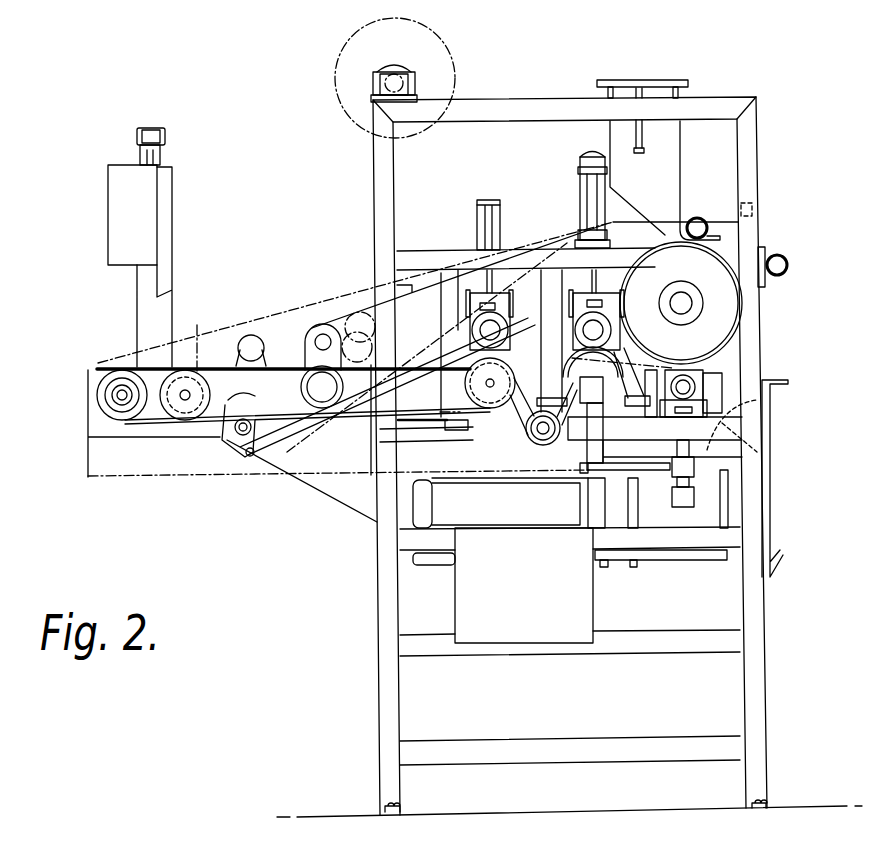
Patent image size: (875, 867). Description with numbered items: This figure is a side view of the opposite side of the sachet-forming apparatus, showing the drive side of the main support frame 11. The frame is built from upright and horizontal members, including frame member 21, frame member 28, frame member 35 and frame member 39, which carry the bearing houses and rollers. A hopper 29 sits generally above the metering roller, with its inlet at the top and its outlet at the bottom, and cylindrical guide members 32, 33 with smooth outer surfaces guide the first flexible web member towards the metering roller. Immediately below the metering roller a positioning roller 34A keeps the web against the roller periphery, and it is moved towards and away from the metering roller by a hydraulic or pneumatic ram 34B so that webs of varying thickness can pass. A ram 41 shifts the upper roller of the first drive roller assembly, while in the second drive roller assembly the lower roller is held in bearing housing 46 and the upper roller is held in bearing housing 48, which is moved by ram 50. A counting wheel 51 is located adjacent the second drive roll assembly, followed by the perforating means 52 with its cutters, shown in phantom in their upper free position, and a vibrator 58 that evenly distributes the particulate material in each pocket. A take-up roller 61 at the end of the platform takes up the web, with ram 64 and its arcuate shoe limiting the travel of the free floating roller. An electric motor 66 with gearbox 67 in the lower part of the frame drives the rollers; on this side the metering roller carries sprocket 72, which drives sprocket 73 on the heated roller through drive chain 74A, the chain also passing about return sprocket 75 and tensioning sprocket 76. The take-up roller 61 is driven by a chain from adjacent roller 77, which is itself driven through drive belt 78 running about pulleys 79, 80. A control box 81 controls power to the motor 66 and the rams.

The main support frame 11 is at (528, 95).
The frame member 21 is at (383, 185).
The frame member 28 is at (435, 253).
The hopper 29 is at (668, 148).
The guide member 32 is at (780, 256).
The guide member 33 is at (697, 217).
The positioning roller 34A is at (690, 373).
The hydraulic or pneumatic ram 34B is at (695, 473).
The frame member 35 is at (748, 150).
The frame member 39 is at (712, 424).
The hydraulic or pneumatic ram 41 is at (585, 190).
The bearing housing 46 is at (447, 413).
The bearing housing 48 is at (470, 310).
The hydraulic or pneumatic ram 50 is at (483, 200).
The counting wheel 51 is at (370, 303).
The perforating means 52 is at (312, 308).
The vibrator 58 is at (250, 330).
The take-up roller 61 is at (90, 390).
The hydraulic or pneumatic ram 64 is at (167, 133).
The electric motor 66 is at (508, 505).
The gearbox 67 is at (706, 518).
The sprocket 72 is at (743, 297).
The sprocket 73 is at (621, 359).
The drive chain 74A is at (282, 430).
The return sprocket 75 is at (228, 445).
The tensioning sprocket 76 is at (537, 438).
The adjacent roller 77 is at (182, 412).
The drive belt 78 is at (330, 405).
The pulley 79 is at (483, 395).
The pulley 80 is at (197, 333).
The control box 81 is at (118, 200).